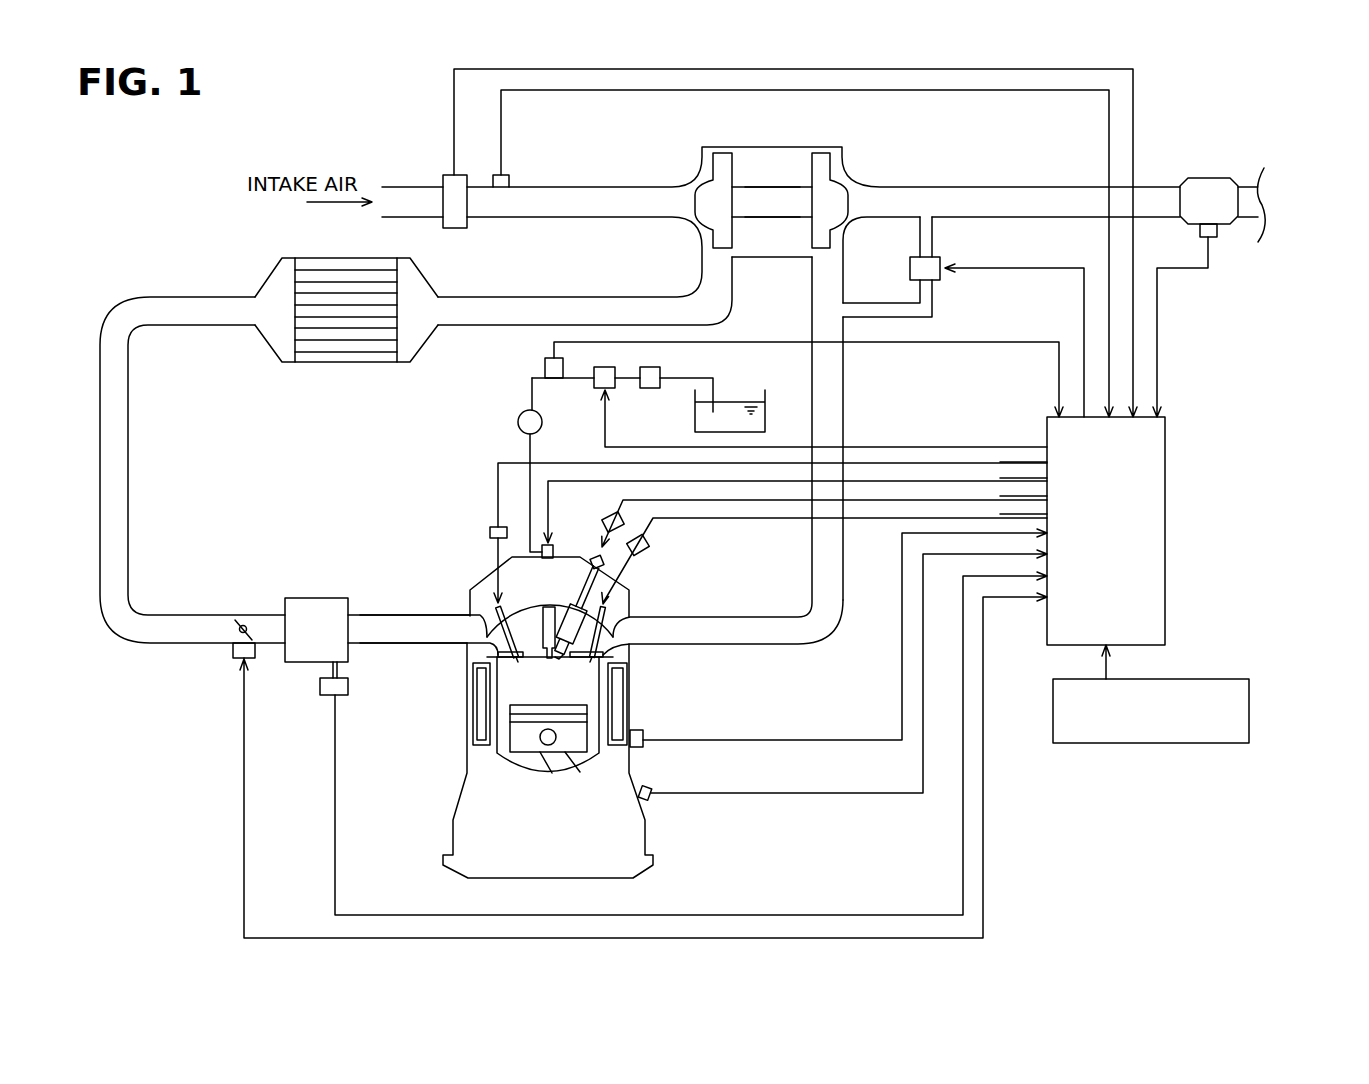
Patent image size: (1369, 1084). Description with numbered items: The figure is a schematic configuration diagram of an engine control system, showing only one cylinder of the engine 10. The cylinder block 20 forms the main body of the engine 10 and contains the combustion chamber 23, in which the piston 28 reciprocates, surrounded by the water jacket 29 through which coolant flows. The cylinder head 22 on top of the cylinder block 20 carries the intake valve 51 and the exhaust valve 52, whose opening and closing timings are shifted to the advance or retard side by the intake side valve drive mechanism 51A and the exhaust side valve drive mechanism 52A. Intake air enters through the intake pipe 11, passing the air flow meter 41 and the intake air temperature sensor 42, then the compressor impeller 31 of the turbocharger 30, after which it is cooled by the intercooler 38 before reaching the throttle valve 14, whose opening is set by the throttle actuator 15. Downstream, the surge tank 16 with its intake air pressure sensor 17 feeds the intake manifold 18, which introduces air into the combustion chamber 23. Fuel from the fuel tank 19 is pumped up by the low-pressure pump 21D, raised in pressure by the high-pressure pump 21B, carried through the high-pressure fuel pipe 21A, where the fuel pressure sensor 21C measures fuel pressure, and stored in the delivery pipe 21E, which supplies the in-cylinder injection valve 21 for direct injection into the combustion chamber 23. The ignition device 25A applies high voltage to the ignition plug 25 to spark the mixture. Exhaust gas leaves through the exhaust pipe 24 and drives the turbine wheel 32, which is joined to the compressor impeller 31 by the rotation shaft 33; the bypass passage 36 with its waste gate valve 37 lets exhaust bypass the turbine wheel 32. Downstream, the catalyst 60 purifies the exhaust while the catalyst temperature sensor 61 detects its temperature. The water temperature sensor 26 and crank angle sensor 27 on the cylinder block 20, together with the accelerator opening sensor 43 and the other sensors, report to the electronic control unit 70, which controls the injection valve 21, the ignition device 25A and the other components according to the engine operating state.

The engine 10 is at (717, 700).
The intake pipe 11 is at (207, 615).
The throttle valve 14 is at (245, 626).
The throttle actuator 15 is at (240, 660).
The surge tank 16 is at (318, 598).
The intake air pressure sensor 17 is at (320, 688).
The intake manifold 18 is at (370, 644).
The fuel tank 19 is at (765, 422).
The cylinder block 20 is at (630, 695).
The in-cylinder injection valve 21 is at (553, 551).
The high-pressure fuel pipe 21A is at (596, 388).
The high-pressure pump 21B is at (615, 388).
The fuel pressure sensor 21C is at (545, 368).
The low-pressure pump 21D is at (662, 365).
The delivery pipe 21E is at (518, 420).
The cylinder head 22 is at (631, 602).
The combustion chamber 23 is at (614, 706).
The exhaust pipe 24 is at (772, 617).
The ignition plug 25 is at (577, 596).
The ignition device 25A is at (606, 521).
The water temperature sensor 26 is at (645, 743).
The crank angle sensor 27 is at (650, 791).
The piston 28 is at (520, 700).
The water jacket 29 is at (482, 733).
The turbocharger 30 is at (772, 176).
The compressor impeller 31 is at (703, 167).
The turbine wheel 32 is at (836, 168).
The rotation shaft 33 is at (797, 187).
The bypass passage 36 is at (890, 303).
The waste gate valve 37 is at (940, 280).
The intercooler 38 is at (306, 258).
The air flow meter 41 is at (443, 177).
The intake air temperature sensor 42 is at (509, 180).
The accelerator opening sensor 43 is at (1249, 711).
The intake valve 51 is at (481, 603).
The intake side valve drive mechanism 51A is at (490, 531).
The exhaust valve 52 is at (630, 647).
The exhaust side valve drive mechanism 52A is at (647, 556).
The catalyst 60 is at (1208, 178).
The catalyst temperature sensor 61 is at (1217, 232).
The electronic control unit 70 is at (1165, 527).